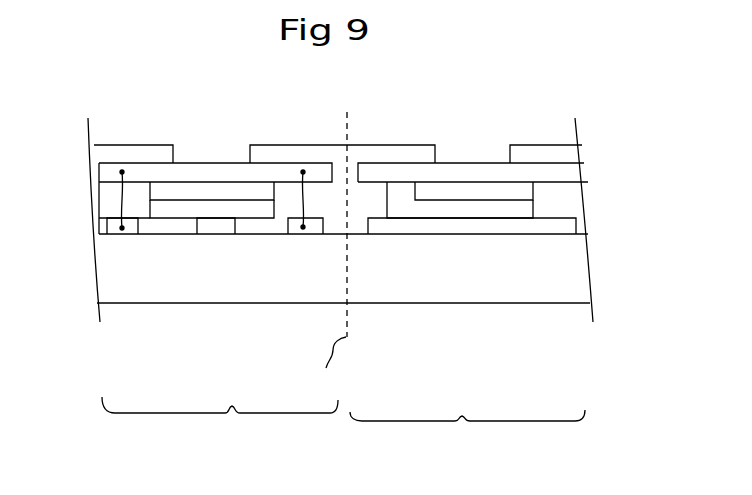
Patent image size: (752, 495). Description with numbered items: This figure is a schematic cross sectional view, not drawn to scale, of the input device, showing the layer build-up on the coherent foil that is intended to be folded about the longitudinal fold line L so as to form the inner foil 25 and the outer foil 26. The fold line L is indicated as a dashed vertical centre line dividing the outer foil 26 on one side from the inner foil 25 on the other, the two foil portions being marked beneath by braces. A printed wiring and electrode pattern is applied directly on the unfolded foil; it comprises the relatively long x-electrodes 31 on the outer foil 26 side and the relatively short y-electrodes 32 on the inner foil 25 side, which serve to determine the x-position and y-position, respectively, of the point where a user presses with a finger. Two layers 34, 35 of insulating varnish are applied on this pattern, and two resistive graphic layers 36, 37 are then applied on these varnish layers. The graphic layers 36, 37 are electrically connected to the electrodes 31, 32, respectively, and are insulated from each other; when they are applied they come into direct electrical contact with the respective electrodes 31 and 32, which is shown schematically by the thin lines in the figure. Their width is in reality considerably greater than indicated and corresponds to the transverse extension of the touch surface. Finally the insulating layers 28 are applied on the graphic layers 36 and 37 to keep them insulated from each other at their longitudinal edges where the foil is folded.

The insulating layer 28 is at (116, 153).
The resistive graphic layer 36 is at (205, 161).
The resistive graphic layer 37 is at (470, 170).
The layer of insulating varnish 35 is at (153, 191).
The layer of insulating varnish 34 is at (153, 212).
The x-electrode 31 is at (122, 228).
The y-electrode 32 is at (510, 229).
The inner foil 25 is at (220, 423).
The outer foil 26 is at (467, 435).
The fold line L is at (333, 254).